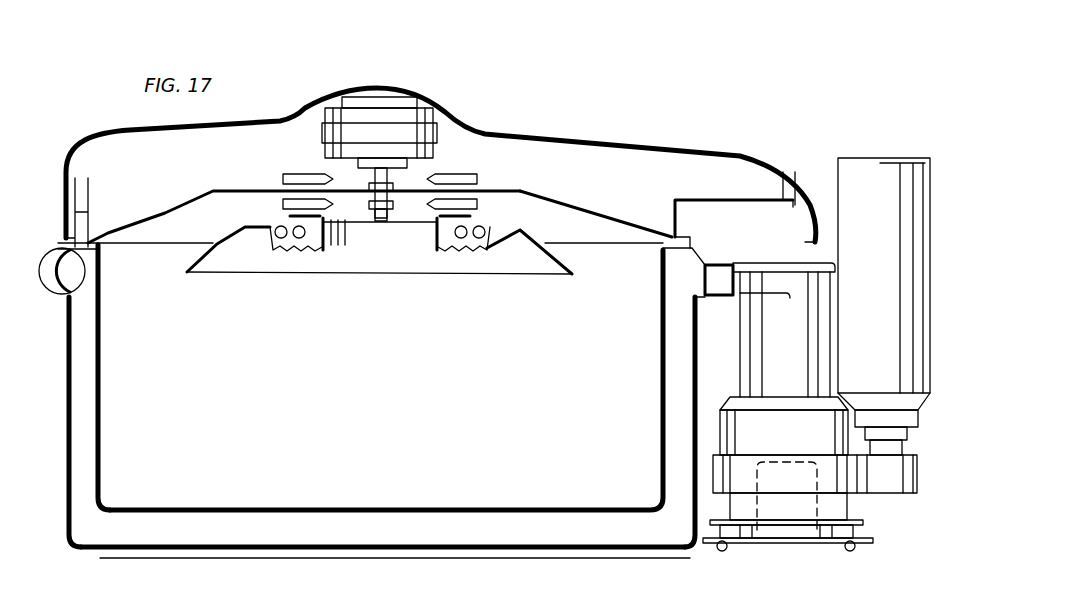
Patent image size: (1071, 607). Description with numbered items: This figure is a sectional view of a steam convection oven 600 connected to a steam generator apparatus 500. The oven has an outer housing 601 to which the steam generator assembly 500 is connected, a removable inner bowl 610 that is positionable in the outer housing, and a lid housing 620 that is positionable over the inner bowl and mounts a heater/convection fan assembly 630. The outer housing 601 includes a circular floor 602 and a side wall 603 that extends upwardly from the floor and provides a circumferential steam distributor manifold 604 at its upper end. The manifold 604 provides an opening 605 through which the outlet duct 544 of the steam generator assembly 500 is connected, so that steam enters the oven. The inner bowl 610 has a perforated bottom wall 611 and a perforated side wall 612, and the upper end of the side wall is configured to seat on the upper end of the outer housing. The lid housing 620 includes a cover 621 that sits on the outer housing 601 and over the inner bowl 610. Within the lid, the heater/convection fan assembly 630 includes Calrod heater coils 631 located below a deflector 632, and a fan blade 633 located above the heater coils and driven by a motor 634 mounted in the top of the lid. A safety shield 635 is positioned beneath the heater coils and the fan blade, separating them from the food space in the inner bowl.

The steam generator apparatus 500 is at (808, 546).
The outlet duct 544 is at (790, 267).
The steam convection oven 600 is at (688, 140).
The outer housing 601 is at (630, 552).
The circular floor 602 is at (452, 551).
The side wall 603 is at (690, 402).
The circumferential steam distributor manifold 604 is at (88, 282).
The opening 605 is at (703, 277).
The removable inner bowl 610 is at (103, 478).
The perforated bottom wall 611 is at (318, 507).
The perforated side wall 612 is at (103, 393).
The lid housing 620 is at (560, 132).
The cover 621 is at (160, 143).
The heater/convection fan assembly 630 is at (478, 206).
The Calrod heater coils 631 is at (480, 222).
The deflector 632 is at (606, 229).
The fan blade 633 is at (278, 208).
The motor 634 is at (322, 145).
The safety shield 635 is at (458, 278).